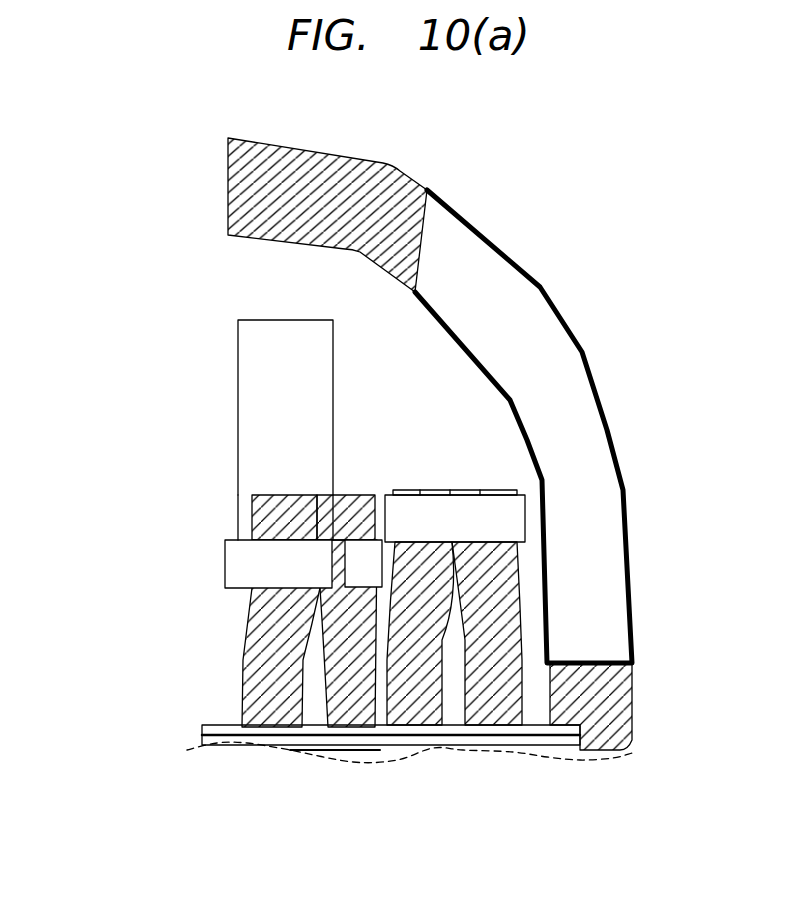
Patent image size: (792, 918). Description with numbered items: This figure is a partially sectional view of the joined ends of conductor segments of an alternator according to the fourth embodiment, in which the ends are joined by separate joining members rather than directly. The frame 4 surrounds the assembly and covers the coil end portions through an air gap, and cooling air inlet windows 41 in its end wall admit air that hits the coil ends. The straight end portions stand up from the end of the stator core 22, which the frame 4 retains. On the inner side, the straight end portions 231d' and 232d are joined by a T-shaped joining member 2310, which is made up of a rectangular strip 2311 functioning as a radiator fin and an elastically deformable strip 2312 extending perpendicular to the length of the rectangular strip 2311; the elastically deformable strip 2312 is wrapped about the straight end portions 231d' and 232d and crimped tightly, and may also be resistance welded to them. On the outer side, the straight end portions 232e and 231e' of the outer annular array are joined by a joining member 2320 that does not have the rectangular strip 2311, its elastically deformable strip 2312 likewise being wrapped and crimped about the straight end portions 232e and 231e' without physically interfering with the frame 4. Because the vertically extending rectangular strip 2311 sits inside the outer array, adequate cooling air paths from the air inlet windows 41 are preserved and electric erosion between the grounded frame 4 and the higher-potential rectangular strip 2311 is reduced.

The frame 4 is at (406, 174).
The cooling air inlet windows 41 is at (548, 374).
The stator core 22 is at (478, 756).
The joining member 2310 is at (296, 494).
The rectangular strip 2311 is at (264, 386).
The elastically deformable strip 2312 is at (375, 541).
The straight end portion 231d' is at (233, 590).
The straight end portion 232d is at (345, 528).
The straight end portion 232e is at (428, 578).
The straight end portion 231e' is at (487, 587).
The joining member 2320 is at (557, 587).